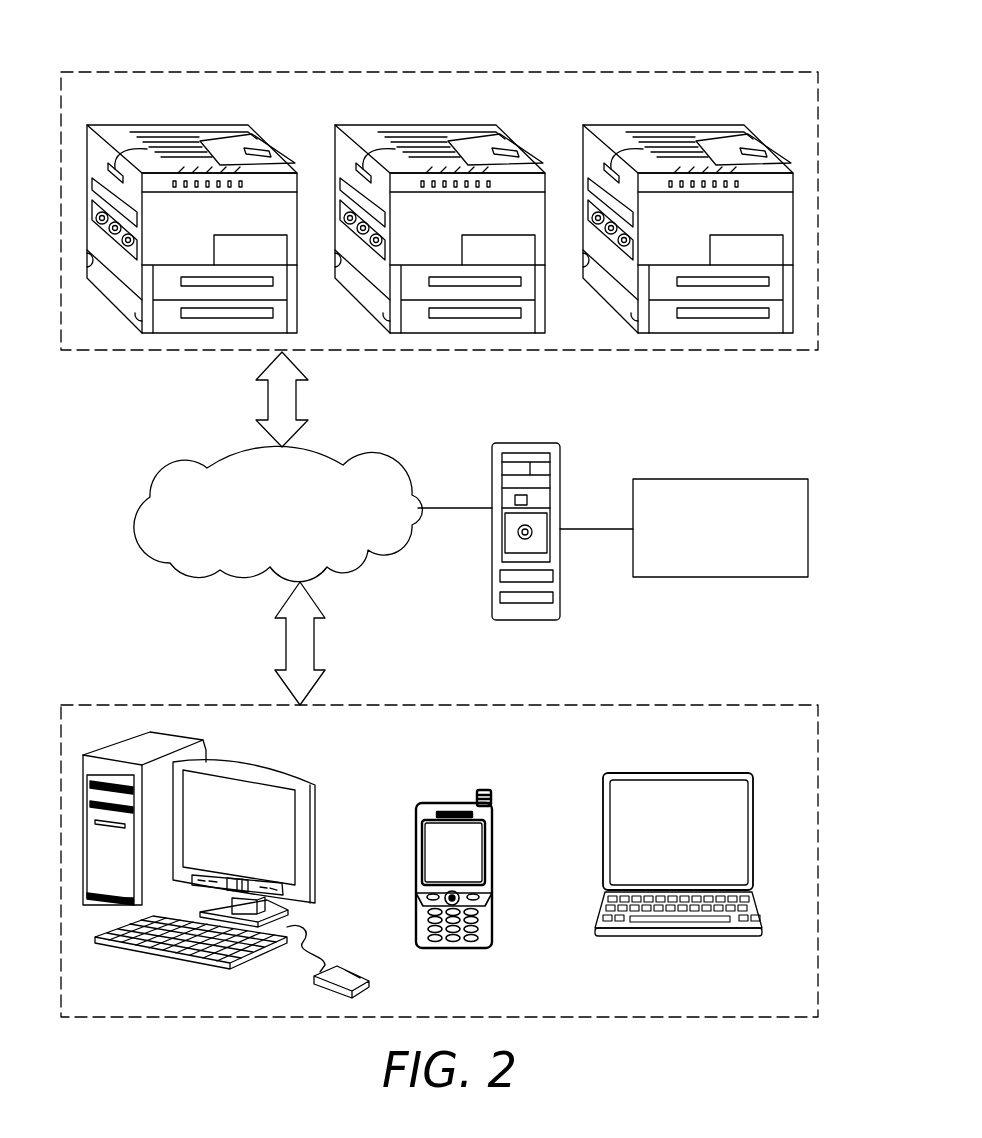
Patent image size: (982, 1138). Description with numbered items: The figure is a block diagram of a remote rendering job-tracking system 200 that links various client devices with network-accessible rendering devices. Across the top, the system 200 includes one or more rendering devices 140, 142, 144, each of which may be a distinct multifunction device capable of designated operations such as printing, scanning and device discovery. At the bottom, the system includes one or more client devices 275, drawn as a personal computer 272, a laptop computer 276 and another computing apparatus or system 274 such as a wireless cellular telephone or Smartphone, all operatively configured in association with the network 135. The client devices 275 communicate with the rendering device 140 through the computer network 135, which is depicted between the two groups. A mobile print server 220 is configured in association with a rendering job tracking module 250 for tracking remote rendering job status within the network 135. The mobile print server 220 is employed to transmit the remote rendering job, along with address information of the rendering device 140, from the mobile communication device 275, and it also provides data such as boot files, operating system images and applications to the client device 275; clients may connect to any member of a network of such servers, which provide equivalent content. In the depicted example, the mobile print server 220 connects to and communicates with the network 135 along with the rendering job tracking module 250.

The remote rendering job-tracking system 200 is at (720, 53).
The rendering device 140 is at (225, 125).
The rendering device 142 is at (443, 125).
The rendering device 144 is at (688, 125).
The network 135 is at (398, 477).
The mobile print server 220 is at (533, 443).
The rendering job tracking module 250 is at (728, 479).
The client devices 275 is at (722, 704).
The personal computer 272 is at (318, 798).
The computing apparatus or system 274 is at (492, 828).
The laptop computer 276 is at (707, 773).